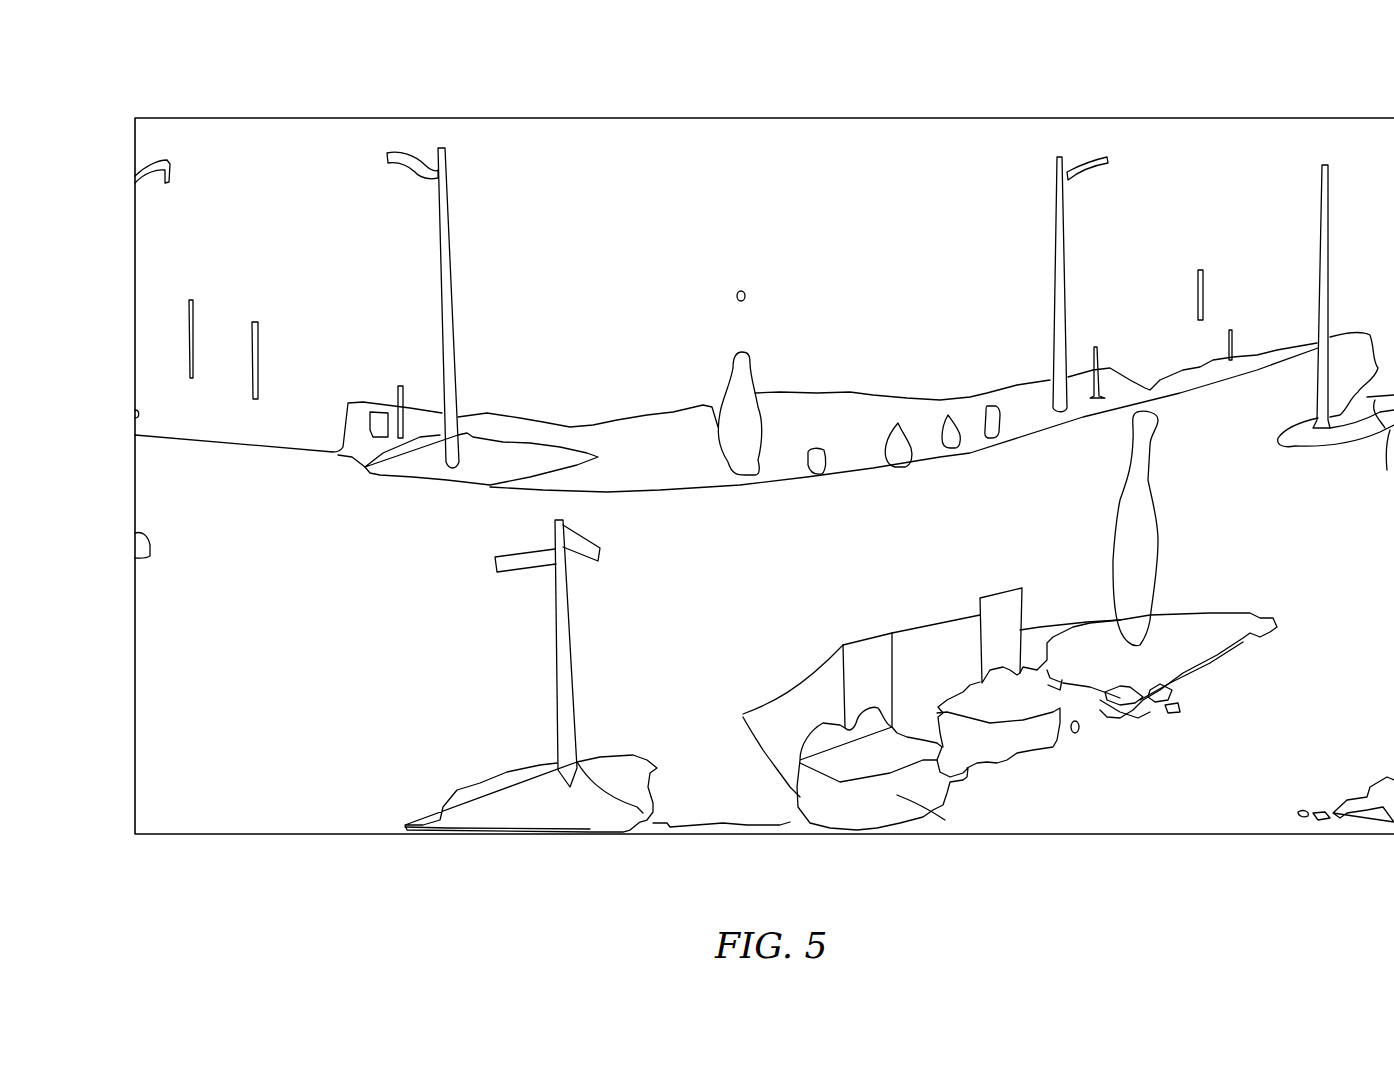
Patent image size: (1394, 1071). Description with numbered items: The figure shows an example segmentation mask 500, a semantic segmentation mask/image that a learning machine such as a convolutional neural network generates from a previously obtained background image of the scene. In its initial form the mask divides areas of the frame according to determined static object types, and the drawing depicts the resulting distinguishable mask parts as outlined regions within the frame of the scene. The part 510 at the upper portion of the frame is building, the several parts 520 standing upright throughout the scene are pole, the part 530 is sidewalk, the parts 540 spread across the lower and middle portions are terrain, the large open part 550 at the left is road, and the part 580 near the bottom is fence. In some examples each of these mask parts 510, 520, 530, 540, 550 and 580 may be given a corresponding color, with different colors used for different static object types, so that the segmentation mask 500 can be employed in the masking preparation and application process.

The segmentation mask 500 is at (104, 75).
The building mask part 510 is at (292, 247).
The pole mask part 520 is at (458, 298).
The sidewalk mask part 530 is at (652, 440).
The terrain mask part 540 is at (152, 540).
The road mask part 550 is at (305, 642).
The fence mask part 580 is at (897, 795).